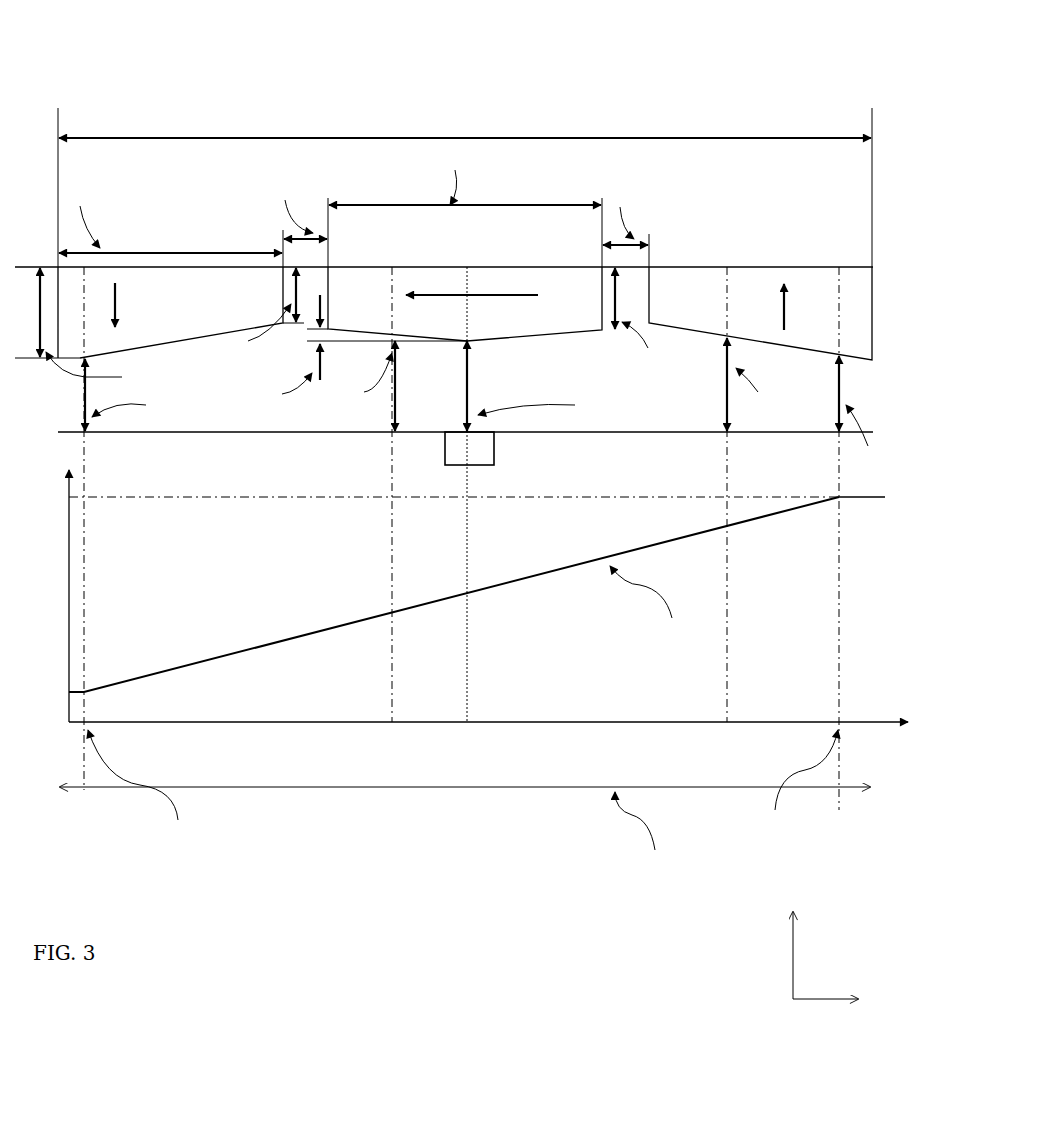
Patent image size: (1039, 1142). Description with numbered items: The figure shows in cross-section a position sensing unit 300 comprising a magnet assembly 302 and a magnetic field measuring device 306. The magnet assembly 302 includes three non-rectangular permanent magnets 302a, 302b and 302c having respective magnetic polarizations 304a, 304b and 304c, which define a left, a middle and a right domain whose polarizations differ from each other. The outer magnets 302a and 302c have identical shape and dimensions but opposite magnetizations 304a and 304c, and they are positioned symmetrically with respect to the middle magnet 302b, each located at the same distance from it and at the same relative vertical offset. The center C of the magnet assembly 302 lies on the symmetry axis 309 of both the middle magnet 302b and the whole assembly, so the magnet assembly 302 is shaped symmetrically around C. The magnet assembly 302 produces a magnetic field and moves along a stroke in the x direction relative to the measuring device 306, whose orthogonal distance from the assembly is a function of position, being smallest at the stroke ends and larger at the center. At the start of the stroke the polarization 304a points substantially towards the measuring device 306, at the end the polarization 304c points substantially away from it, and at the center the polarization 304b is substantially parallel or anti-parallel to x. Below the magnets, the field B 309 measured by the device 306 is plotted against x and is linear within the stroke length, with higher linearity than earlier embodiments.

The position sensing unit 300 is at (470, 527).
The magnet assembly (MA) 302 is at (718, 106).
The first permanent magnet 302a is at (138, 267).
The second permanent magnet 302b is at (497, 265).
The third permanent magnet 302c is at (797, 262).
The magnetic polarization of first magnet 304a is at (118, 290).
The magnetic polarization of second magnet 304b is at (430, 280).
The magnetic polarization of third magnet 304c is at (773, 287).
The magnetic field measuring device (MFMD) 306 is at (498, 458).
The symmetry axis / measured magnetic field B 309 is at (74, 450).